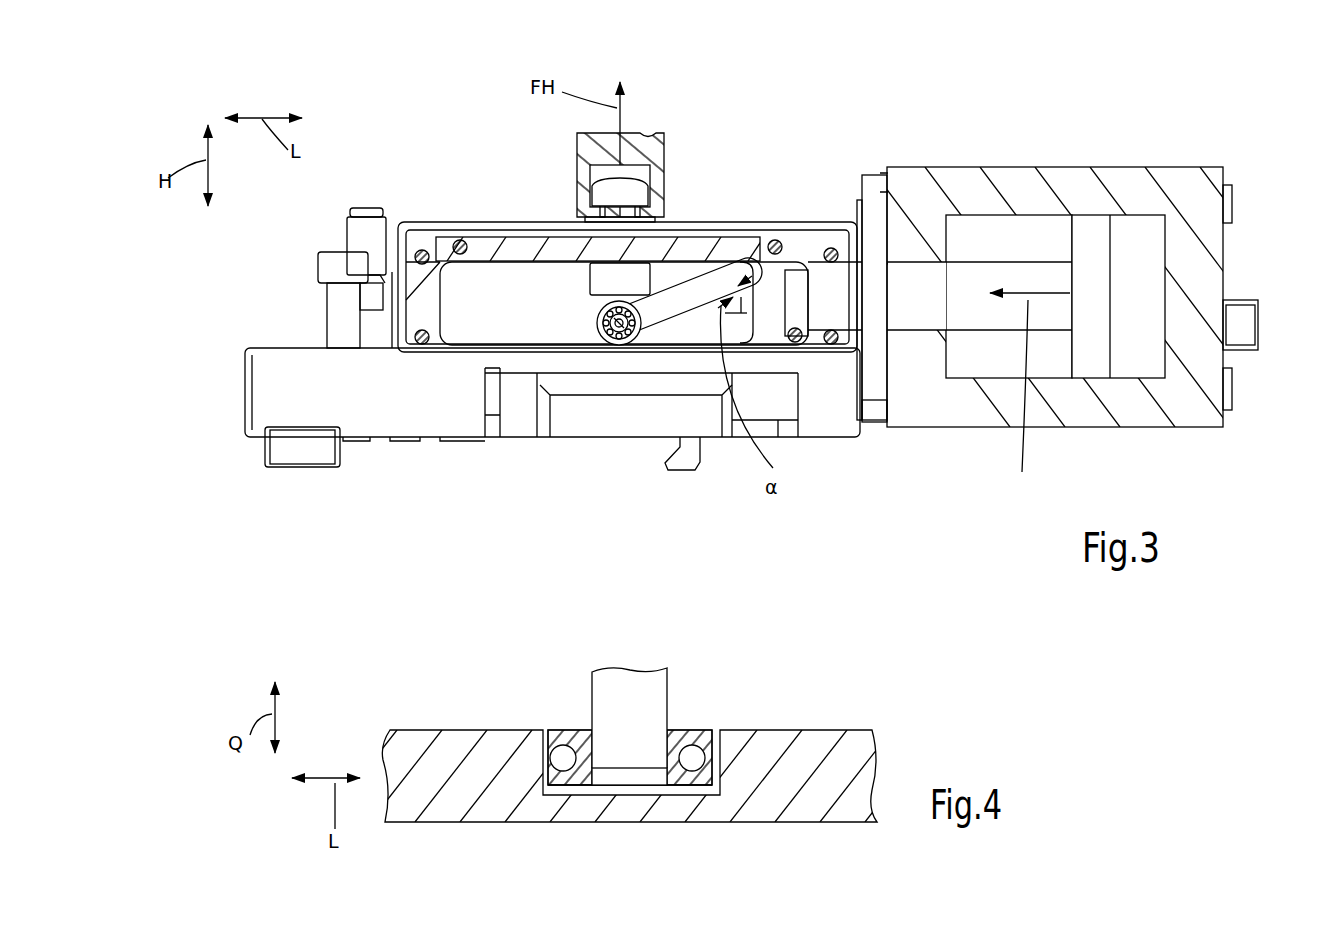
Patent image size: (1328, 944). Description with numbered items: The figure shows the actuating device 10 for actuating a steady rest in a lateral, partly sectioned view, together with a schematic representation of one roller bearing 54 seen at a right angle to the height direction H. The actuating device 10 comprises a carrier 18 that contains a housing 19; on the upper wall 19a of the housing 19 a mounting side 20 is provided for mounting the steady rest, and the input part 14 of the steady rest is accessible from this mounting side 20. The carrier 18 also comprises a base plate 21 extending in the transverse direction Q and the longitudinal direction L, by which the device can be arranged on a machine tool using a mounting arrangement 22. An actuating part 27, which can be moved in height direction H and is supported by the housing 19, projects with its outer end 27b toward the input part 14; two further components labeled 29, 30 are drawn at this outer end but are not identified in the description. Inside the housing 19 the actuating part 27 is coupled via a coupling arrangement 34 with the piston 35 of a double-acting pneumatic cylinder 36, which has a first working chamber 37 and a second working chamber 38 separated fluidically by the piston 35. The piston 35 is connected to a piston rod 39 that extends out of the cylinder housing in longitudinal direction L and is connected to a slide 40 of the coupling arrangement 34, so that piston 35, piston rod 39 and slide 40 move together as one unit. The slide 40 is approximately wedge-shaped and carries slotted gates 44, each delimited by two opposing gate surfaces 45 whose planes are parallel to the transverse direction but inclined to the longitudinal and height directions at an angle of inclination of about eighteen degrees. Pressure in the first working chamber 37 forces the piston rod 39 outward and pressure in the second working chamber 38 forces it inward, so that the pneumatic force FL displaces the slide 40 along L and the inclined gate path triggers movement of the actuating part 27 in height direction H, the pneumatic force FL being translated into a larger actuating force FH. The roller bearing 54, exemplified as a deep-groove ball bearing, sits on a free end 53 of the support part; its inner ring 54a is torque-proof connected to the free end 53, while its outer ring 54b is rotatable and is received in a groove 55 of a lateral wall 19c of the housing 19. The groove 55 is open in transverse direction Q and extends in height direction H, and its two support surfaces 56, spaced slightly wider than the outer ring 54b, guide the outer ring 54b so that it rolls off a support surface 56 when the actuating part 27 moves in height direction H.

In FIG. 3, the actuating device 10 is at (1066, 140).
In FIG. 3, the input part 14 is at (609, 154).
In FIG. 3, the carrier 18 is at (497, 456).
In FIG. 3, the housing 19 is at (835, 312).
In FIG. 3, the upper wall 19a is at (756, 242).
In FIG. 4, the lateral walls 19c is at (825, 748).
In FIG. 3, the mounting side 20 is at (627, 237).
In FIG. 3, the base plate 21 is at (421, 420).
In FIG. 3, the mounting arrangement 22 is at (605, 449).
In FIG. 3, the actuating part 27 is at (584, 273).
In FIG. 3, the outer end 27b is at (642, 193).
In FIG. 3, the coupling element 29 is at (576, 170).
In FIG. 3, the coupling element 30 is at (600, 180).
In FIG. 3, the coupling arrangement 34 is at (641, 431).
In FIG. 3, the piston 35 is at (1098, 355).
In FIG. 3, the pneumatic cylinder 36 is at (1071, 298).
In FIG. 3, the first working chamber 37 is at (1145, 262).
In FIG. 3, the second working chamber 38 is at (1005, 232).
In FIG. 3, the piston rod 39 is at (987, 302).
In FIG. 3, the slide 40 is at (703, 330).
In FIG. 3, the slotted gate 44 is at (675, 310).
In FIG. 3, the gate surfaces 45 is at (742, 292).
In FIG. 3, the free end 53 is at (616, 344).
In FIG. 4, the free end 53 is at (620, 735).
In FIG. 3, the roller bearing 54 is at (594, 322).
In FIG. 4, the inner ring 54a is at (672, 735).
In FIG. 4, the outer ring 54b is at (706, 790).
In FIG. 4, the groove 55 is at (651, 743).
In FIG. 4, the support surfaces 56 is at (553, 790).